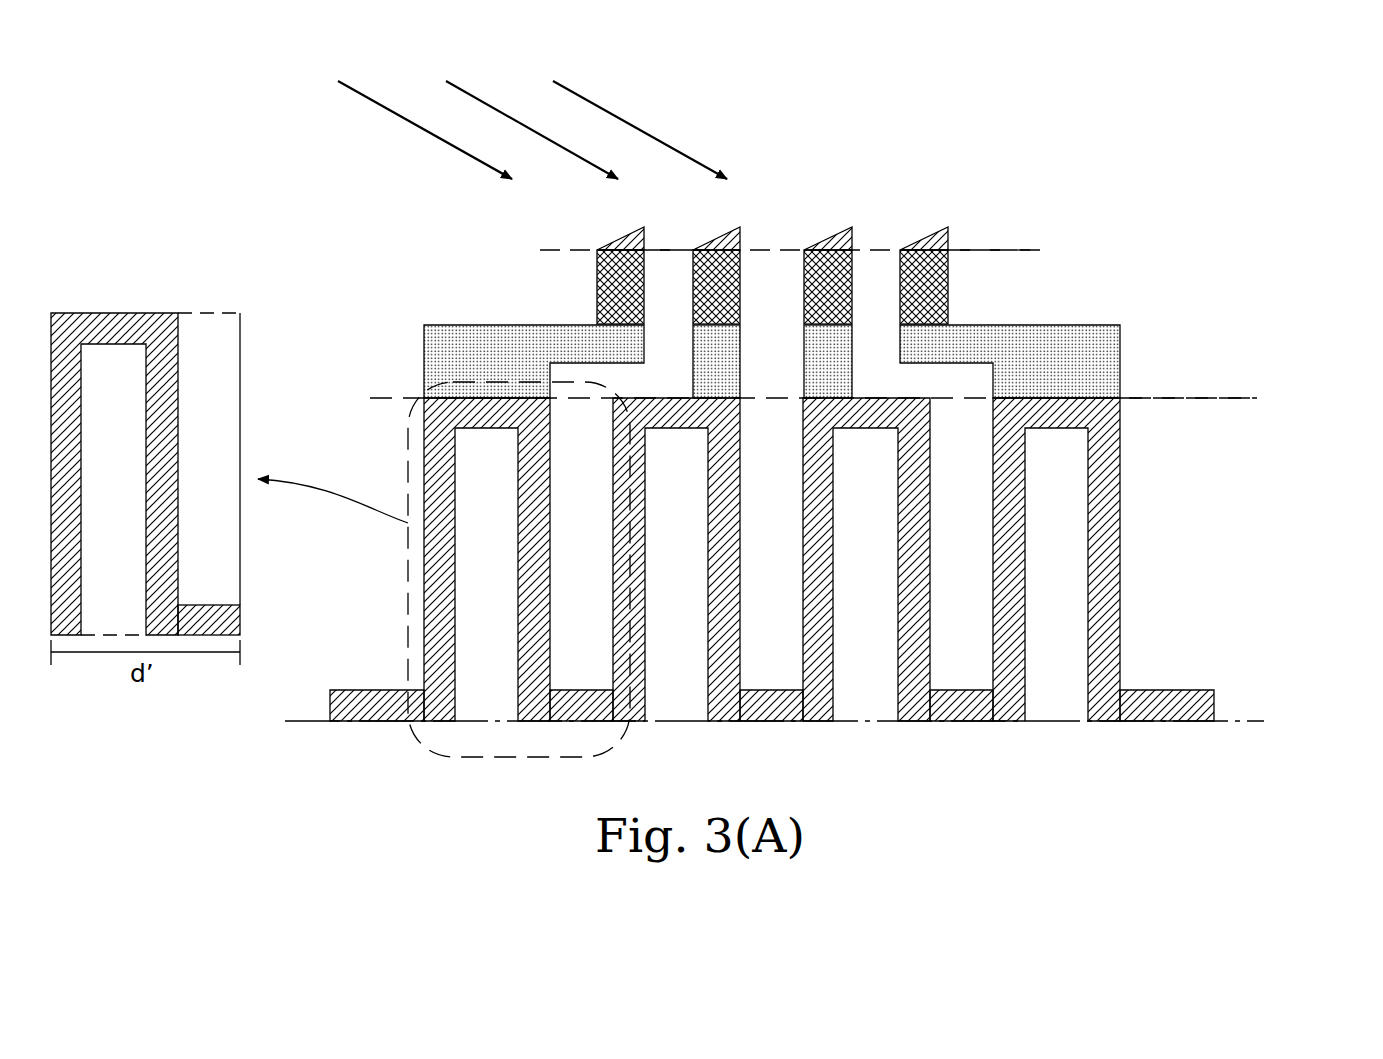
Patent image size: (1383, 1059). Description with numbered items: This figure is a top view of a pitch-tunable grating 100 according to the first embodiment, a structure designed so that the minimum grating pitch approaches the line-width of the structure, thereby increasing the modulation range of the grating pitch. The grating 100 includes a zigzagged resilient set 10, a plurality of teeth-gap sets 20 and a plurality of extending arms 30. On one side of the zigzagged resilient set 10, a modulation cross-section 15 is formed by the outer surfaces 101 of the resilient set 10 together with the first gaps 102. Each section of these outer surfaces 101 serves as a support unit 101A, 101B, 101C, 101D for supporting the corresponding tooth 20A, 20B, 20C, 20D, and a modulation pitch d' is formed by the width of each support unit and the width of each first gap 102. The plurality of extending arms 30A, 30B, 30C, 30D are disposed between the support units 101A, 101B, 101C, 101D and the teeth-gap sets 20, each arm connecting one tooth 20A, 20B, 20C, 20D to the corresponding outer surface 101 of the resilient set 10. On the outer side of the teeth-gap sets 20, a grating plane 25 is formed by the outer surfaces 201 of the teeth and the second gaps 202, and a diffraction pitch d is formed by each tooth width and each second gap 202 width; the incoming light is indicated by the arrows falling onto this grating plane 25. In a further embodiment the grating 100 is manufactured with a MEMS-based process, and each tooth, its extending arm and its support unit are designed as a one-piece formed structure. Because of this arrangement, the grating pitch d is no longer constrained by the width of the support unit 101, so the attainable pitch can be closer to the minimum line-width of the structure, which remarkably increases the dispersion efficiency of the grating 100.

The grating 100 is at (1162, 147).
The zigzagged resilient set 10 is at (1277, 396).
The modulation cross-section 15 is at (1255, 396).
The teeth-gap sets 20 is at (1127, 247).
The tooth 20A is at (612, 287).
The tooth 20B is at (717, 284).
The tooth 20C is at (830, 289).
The tooth 20D is at (935, 285).
The grating plane 25 is at (975, 250).
The extending arms 30 is at (1209, 322).
The extending arm 30A is at (452, 360).
The extending arm 30B is at (716, 358).
The extending arm 30C is at (830, 363).
The extending arm 30D is at (1094, 355).
The outer surface of the zigzagged resilient set 101 is at (97, 310).
The support unit 101A is at (462, 400).
The support unit 101B is at (657, 415).
The support unit 101C is at (875, 398).
The support unit 101D is at (1078, 398).
The first gap 102 is at (218, 310).
The outer surface of the tooth 201 is at (611, 246).
The second gap 202 is at (673, 247).